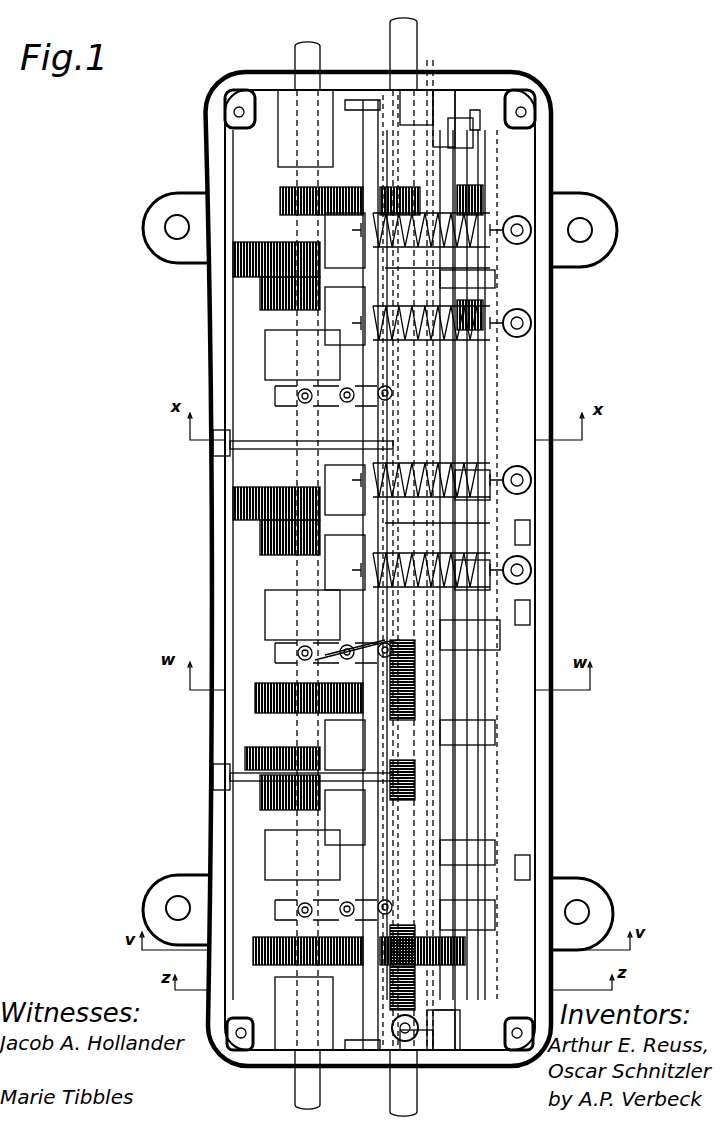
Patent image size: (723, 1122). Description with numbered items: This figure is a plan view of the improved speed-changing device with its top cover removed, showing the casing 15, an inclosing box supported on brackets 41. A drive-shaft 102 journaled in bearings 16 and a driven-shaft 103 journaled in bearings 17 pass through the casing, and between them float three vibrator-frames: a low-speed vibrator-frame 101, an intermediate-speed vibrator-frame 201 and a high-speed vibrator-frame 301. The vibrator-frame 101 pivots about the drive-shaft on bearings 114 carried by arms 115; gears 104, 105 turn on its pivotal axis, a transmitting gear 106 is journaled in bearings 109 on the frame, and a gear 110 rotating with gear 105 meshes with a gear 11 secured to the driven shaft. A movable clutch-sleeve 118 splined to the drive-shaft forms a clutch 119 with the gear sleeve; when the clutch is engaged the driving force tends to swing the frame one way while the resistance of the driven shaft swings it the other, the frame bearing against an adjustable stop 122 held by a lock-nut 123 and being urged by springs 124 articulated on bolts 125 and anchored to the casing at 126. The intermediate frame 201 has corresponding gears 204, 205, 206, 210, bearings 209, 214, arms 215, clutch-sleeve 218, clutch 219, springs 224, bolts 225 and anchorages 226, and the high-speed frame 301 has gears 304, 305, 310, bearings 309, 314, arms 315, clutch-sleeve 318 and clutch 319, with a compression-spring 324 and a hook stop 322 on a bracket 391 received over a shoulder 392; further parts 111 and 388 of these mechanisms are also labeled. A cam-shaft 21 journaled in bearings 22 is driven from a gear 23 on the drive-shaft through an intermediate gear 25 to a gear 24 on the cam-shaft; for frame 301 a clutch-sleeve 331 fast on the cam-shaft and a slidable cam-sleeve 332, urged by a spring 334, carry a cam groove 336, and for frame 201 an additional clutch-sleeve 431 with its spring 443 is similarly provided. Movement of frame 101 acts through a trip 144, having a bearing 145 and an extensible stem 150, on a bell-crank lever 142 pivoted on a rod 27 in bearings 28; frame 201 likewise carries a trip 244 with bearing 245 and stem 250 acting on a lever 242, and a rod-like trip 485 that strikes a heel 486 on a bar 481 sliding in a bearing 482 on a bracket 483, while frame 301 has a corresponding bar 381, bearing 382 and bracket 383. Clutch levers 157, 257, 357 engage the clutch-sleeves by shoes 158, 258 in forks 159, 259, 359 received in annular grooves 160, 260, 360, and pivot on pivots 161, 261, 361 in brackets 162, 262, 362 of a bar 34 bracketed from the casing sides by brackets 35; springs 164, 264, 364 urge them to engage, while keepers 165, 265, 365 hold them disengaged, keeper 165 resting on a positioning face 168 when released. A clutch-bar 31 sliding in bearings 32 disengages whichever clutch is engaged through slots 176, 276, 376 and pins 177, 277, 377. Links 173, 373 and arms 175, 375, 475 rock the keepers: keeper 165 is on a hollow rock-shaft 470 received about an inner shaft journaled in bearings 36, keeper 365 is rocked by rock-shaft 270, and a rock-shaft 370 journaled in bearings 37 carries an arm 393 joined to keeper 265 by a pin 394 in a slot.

The gear 11 is at (480, 128).
The casing 15 is at (580, 102).
The bearings 16 is at (312, 120).
The bearings 17 is at (380, 960).
The cam-shaft 21 is at (460, 135).
The bearings 22 is at (450, 120).
The gear 23 is at (207, 945).
The gear 24 is at (466, 950).
The intermediate gear 25 is at (330, 955).
The rod 27 is at (384, 120).
The bearings 28 is at (397, 120).
The clutch-bar 31 is at (435, 110).
The bearings 32 is at (425, 100).
The bar 34 is at (364, 136).
The brackets 35 is at (360, 100).
The bearings 36 is at (530, 348).
The bearings 37 is at (532, 600).
The brackets 41 is at (78, 205).
The vibrator-frame 101 is at (290, 312).
The drive-shaft 102 is at (293, 52).
The driven-shaft 103 is at (415, 47).
The gear 104 is at (262, 300).
The gear 105 is at (234, 250).
The transmitting gear 106 is at (266, 320).
The bearings 109 is at (290, 345).
The gear 110 is at (330, 300).
The gear 111 is at (290, 195).
The bearings 114 is at (290, 265).
The arms 115 is at (300, 250).
The movable clutch-sleeve 118 is at (290, 400).
The clutch 119 is at (266, 350).
The stop 122 is at (240, 258).
The lock-nut 123 is at (262, 290).
The spring 124 is at (490, 200).
The bolts 125 is at (330, 235).
The spring anchorage 126 is at (532, 225).
The bell-crank lever 142 is at (535, 238).
The trip 144 is at (497, 278).
The bearing 145 is at (310, 215).
The stem 150 is at (585, 228).
The clutch lever 157 is at (300, 425).
The shoes 158 is at (72, 410).
The fork 159 is at (280, 415).
The annular groove 160 is at (290, 405).
The pivot 161 is at (298, 396).
The bracket 162 is at (300, 385).
The spring 164 is at (532, 425).
The keeper 165 is at (532, 385).
The positioning face 168 is at (626, 382).
The link 173 is at (532, 300).
The arm 175 is at (532, 290).
The slot 176 is at (532, 372).
The pin 177 is at (560, 405).
The vibrator-frame 201 is at (300, 690).
The gear 204 is at (326, 490).
The gear 205 is at (240, 520).
The transmitting gear 206 is at (326, 560).
The bearings 209 is at (300, 240).
The gear 210 is at (230, 470).
The bearings 214 is at (330, 485).
The arms 215 is at (97, 498).
The movable clutch-sleeve 218 is at (300, 640).
The clutch 219 is at (300, 620).
The springs 224 is at (532, 482).
The bolts 225 is at (240, 500).
The spring anchorage 226 is at (532, 473).
The bell-crank lever 242 is at (532, 530).
The trip 244 is at (492, 485).
The bearing 245 is at (262, 540).
The stem 250 is at (266, 610).
The clutch lever 257 is at (300, 670).
The shoes 258 is at (298, 658).
The fork 259 is at (298, 653).
The annular groove 260 is at (290, 655).
The pivot 261 is at (280, 630).
The bracket 262 is at (290, 625).
The spring 264 is at (500, 700).
The keeper 265 is at (500, 635).
The rock-shaft 270 is at (532, 818).
The slot 276 is at (532, 658).
The pin 277 is at (532, 645).
The vibrator-frame 301 is at (250, 825).
The gear 304 is at (260, 810).
The gear 305 is at (326, 810).
The bearings 309 is at (300, 850).
The gear 310 is at (300, 690).
The bearings 314 is at (326, 745).
The arms 315 is at (250, 700).
The movable clutch-sleeve 318 is at (300, 880).
The clutch 319 is at (260, 870).
The stop 322 is at (250, 755).
The compression-spring 324 is at (262, 795).
The clutch-sleeve 331 is at (497, 850).
The cam-sleeve 332 is at (626, 758).
The spring 334 is at (532, 740).
The cam groove 336 is at (427, 780).
The clutch lever 357 is at (300, 950).
The fork 359 is at (250, 895).
The annular groove 360 is at (298, 910).
The pivot 361 is at (290, 918).
The bracket 362 is at (290, 930).
The spring 364 is at (420, 990).
The keeper 365 is at (532, 870).
The rock-shaft 370 is at (497, 730).
The link 373 is at (532, 805).
The arm 375 is at (532, 768).
The slot 376 is at (590, 912).
The pin 377 is at (497, 910).
The bar 381 is at (532, 752).
The bearing 382 is at (266, 850).
The bracket 383 is at (214, 777).
The collar 388 is at (260, 790).
The bracket 391 is at (260, 750).
The shoulder 392 is at (300, 730).
The arm 393 is at (565, 685).
The pin 394 is at (600, 665).
The clutch-sleeve 431 is at (625, 487).
The spring 443 is at (625, 468).
The rock-shaft 470 is at (560, 430).
The arm 475 is at (532, 442).
The bar 481 is at (214, 436).
The bearing 482 is at (270, 460).
The bracket 483 is at (62, 443).
The trip 485 is at (214, 443).
The heel 486 is at (250, 445).